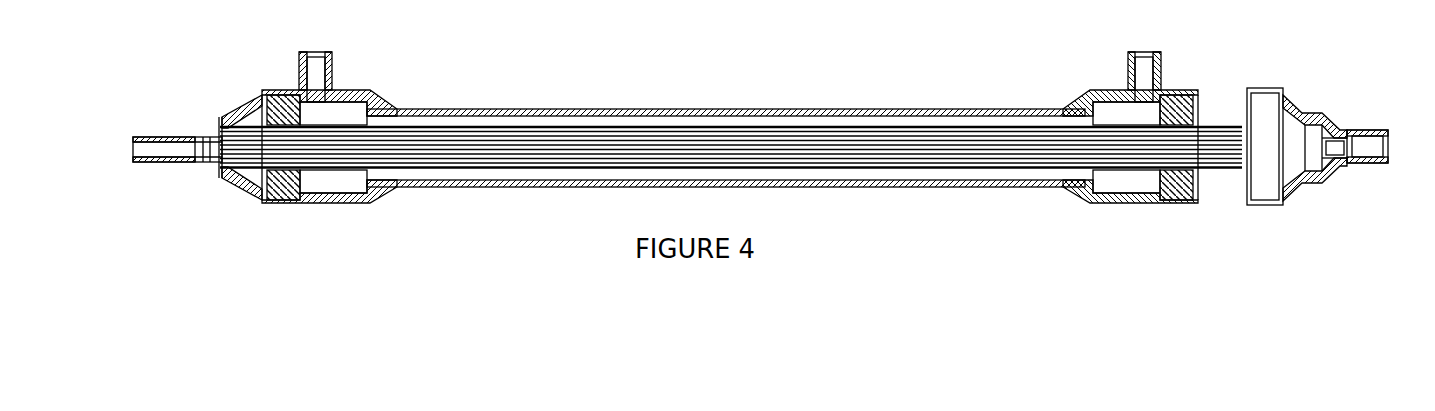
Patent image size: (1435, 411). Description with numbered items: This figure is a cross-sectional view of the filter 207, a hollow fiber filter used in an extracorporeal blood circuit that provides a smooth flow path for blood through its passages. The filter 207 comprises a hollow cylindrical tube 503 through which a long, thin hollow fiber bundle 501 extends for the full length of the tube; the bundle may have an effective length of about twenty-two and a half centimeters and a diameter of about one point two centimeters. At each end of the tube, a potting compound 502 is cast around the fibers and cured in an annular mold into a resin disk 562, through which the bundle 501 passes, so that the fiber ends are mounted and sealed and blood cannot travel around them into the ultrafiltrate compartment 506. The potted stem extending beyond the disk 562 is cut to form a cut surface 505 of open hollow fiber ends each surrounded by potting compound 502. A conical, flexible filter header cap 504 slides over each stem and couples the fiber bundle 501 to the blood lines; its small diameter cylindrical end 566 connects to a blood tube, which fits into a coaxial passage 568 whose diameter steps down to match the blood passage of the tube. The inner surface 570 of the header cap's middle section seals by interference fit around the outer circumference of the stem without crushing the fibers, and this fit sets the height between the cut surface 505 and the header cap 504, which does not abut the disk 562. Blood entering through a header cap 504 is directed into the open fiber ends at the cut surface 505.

The filter 207 is at (731, 173).
The hollow fiber bundle 501 is at (810, 150).
The potting compound 502 is at (1187, 97).
The hollow cylindrical tube 503 is at (943, 108).
The filter header cap 504 is at (218, 118).
The cut surface 505 is at (1247, 162).
The ultrafiltrate compartment 506 is at (590, 172).
The resin disk 562 is at (268, 203).
The small diameter cylindrical end 566 is at (1349, 116).
The passage 568 is at (1372, 125).
The inner surface 570 is at (1308, 184).